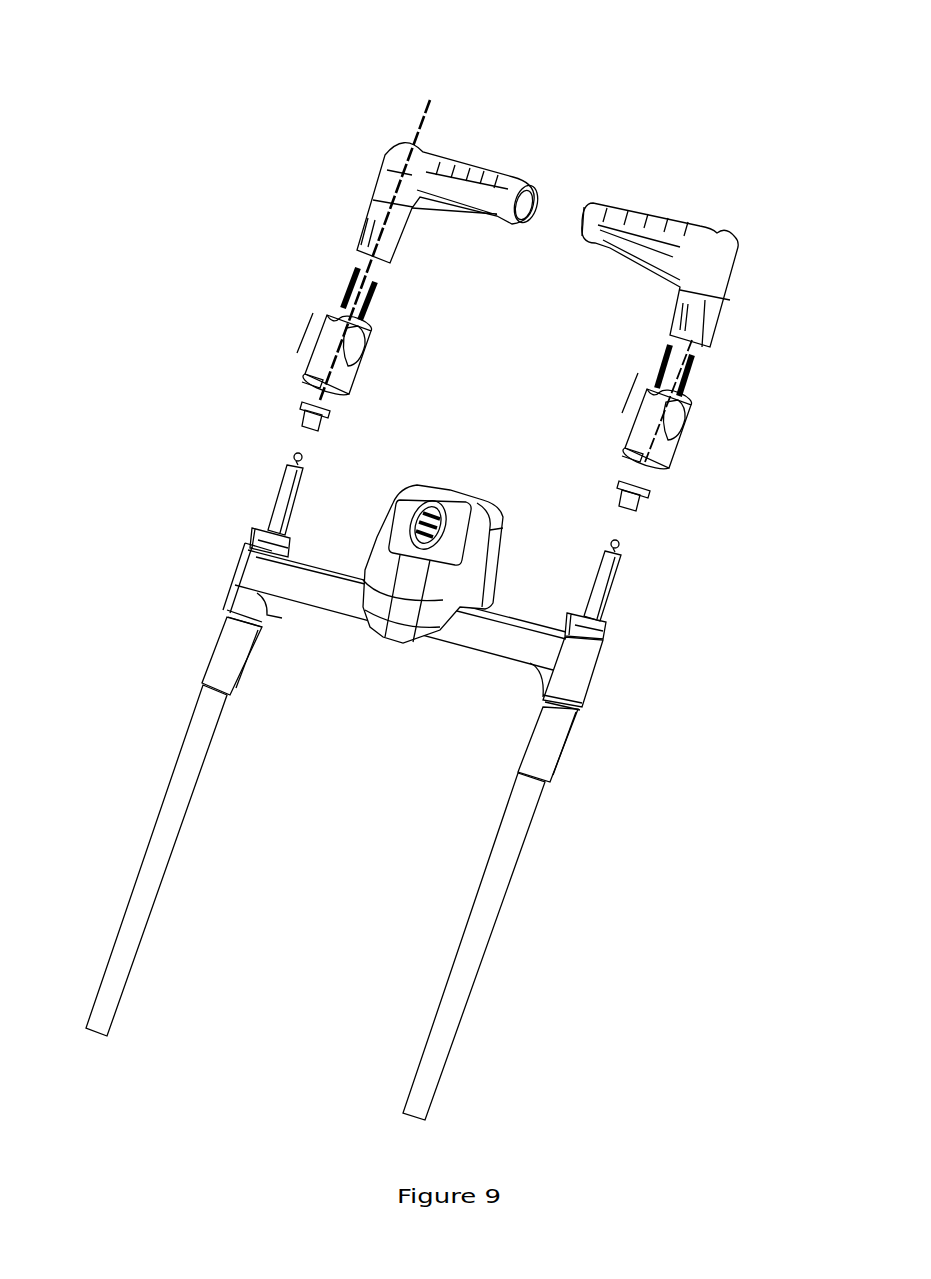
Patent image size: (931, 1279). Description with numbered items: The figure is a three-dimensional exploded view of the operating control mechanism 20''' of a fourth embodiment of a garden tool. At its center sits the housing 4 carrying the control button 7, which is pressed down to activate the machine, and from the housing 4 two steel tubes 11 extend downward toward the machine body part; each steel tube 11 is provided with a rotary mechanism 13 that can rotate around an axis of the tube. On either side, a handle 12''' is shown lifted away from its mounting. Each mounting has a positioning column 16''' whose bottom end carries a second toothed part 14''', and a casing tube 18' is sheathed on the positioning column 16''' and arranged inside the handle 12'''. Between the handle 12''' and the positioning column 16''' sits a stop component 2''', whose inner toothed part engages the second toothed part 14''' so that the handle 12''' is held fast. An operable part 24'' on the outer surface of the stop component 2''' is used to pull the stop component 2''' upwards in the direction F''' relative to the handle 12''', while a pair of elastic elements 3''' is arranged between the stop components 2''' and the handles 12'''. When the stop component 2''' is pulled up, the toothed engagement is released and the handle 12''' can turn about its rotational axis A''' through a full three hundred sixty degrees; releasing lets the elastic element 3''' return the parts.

The operating control mechanism 20''' is at (634, 63).
The rotational axis A''' is at (506, 269).
The handle 12''' is at (584, 208).
The elastic element 3''' is at (533, 298).
The pulling direction F''' is at (459, 356).
The operable part 24'' is at (536, 416).
The stop component 2''' is at (577, 421).
The casing tube 18' is at (475, 456).
The positioning column 16''' is at (461, 515).
The second toothed part 14''' is at (408, 586).
The rotary mechanism 13 is at (223, 638).
The control button 7 is at (425, 515).
The housing 4 is at (488, 630).
The steel tube 11 is at (185, 785).